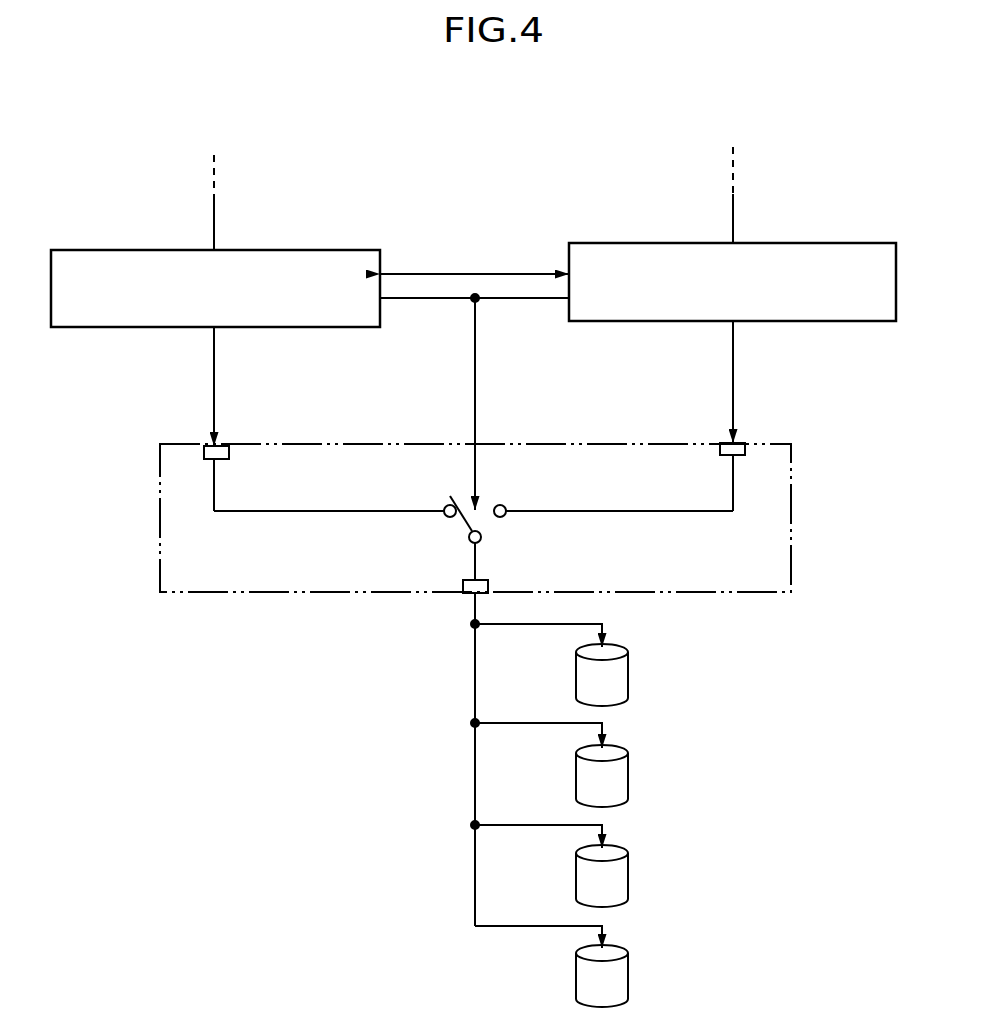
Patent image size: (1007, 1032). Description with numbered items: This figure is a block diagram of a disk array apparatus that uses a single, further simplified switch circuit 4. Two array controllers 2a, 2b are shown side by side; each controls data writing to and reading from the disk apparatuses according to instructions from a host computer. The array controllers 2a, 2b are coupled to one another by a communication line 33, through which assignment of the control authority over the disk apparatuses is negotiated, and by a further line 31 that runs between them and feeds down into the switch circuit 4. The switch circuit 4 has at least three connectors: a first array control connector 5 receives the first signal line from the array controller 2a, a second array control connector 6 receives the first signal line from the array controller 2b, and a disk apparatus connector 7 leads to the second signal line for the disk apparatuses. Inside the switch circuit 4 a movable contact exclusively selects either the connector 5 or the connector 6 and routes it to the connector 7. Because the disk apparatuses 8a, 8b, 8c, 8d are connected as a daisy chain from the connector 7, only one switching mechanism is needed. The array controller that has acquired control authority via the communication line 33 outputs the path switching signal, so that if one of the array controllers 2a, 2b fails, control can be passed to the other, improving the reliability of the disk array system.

The array controller 2a is at (320, 248).
The array controller 2b is at (828, 241).
The communication line 33 is at (524, 268).
The signal line 31 is at (413, 297).
The switch circuit 4 is at (790, 530).
The array control connector 5 is at (222, 443).
The array control connector 6 is at (740, 440).
The disk apparatus connector 7 is at (468, 592).
The disk apparatus 8a is at (627, 677).
The disk apparatus 8b is at (627, 778).
The disk apparatus 8c is at (627, 878).
The disk apparatus 8d is at (627, 978).